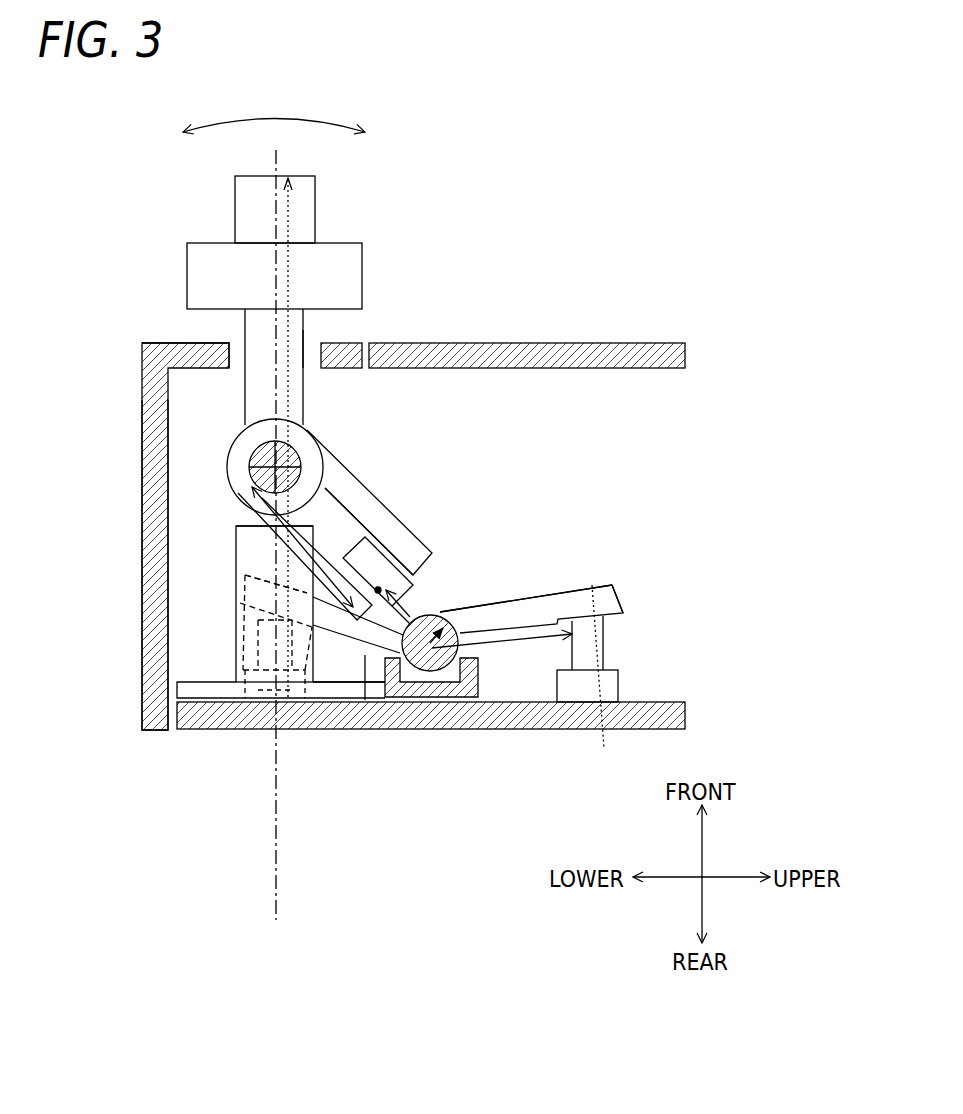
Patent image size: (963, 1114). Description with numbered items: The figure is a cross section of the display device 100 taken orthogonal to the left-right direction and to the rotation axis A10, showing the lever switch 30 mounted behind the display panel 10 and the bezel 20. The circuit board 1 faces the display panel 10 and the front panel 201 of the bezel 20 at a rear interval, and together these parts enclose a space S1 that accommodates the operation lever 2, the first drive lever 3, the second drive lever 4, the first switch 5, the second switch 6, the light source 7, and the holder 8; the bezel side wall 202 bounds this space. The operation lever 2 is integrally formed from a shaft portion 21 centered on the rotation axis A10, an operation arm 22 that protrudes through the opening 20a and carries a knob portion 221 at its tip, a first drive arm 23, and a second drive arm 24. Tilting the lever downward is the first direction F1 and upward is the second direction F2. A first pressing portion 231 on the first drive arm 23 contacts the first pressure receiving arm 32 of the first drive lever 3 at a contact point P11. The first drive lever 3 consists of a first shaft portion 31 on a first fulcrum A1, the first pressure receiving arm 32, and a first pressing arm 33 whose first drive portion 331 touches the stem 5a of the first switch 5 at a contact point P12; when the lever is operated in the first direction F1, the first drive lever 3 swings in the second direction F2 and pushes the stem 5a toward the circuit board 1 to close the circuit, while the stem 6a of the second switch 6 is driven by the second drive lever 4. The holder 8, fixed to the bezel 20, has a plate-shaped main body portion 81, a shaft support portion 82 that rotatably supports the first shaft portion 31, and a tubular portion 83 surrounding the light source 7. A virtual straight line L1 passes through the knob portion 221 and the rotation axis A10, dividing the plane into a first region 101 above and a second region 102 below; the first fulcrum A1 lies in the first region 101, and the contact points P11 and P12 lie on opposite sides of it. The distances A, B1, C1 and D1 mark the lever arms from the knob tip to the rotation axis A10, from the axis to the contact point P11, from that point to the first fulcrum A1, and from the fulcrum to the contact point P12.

The display device 100 is at (593, 172).
The circuit board 1 is at (552, 735).
The display panel 10 is at (617, 342).
The bezel 20 is at (142, 343).
The front panel 201 is at (177, 343).
The frame side wall 202 is at (142, 493).
The opening 20a is at (303, 350).
The operation lever 2 is at (362, 243).
The knob portion 221 is at (235, 210).
The operation arm 22 is at (245, 385).
The shaft portion 21 is at (297, 452).
The first drive arm 23 is at (280, 562).
The first pressing portion 231 is at (376, 586).
The second drive arm 24 is at (376, 512).
The first drive lever 3 is at (498, 606).
The first shaft portion 31 is at (463, 614).
The first pressure receiving arm 32 is at (410, 562).
The first pressing arm 33 is at (590, 617).
The first drive portion 331 is at (604, 683).
The lever switch 30 is at (383, 268).
The second drive lever 4 is at (323, 640).
The first switch 5 is at (620, 669).
The stem 5a is at (620, 636).
The second switch 6 is at (243, 668).
The stem 6a is at (232, 642).
The light source 7 is at (262, 700).
The holder 8 is at (197, 700).
The main body portion 81 is at (331, 700).
The shaft support portion 82 is at (455, 700).
The tubular portion 83 is at (236, 545).
The distance A is at (290, 285).
The first fulcrum A1 is at (428, 650).
The rotation axis A10 is at (249, 467).
The distance B1 is at (300, 556).
The distance C1 is at (430, 585).
The distance D1 is at (508, 650).
The first direction F1 is at (255, 131).
The second direction F2 is at (393, 131).
The virtual straight line L1 is at (274, 558).
The contact point P11 is at (365, 700).
The contact point P12 is at (568, 620).
The space S1 is at (608, 424).
The first region 101 is at (349, 919).
The second region 102 is at (244, 919).